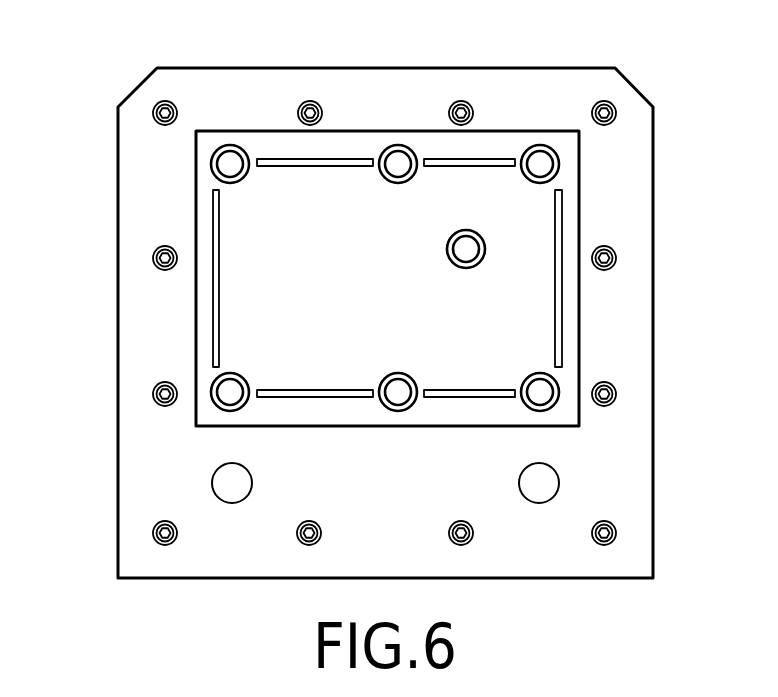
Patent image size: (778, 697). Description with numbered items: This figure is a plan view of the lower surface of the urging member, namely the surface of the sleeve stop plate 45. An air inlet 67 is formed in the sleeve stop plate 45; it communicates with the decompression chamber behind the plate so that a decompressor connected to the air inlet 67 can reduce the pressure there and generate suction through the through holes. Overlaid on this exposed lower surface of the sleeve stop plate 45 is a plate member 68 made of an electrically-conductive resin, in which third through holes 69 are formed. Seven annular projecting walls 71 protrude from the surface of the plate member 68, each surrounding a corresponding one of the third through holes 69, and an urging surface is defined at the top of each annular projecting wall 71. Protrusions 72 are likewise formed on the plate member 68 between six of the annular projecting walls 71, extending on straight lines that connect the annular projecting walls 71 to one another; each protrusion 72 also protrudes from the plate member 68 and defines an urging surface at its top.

The sleeve stop plate 45 is at (118, 140).
The air inlet 67 is at (235, 502).
The plate member 68 is at (196, 317).
The third through holes 69 is at (228, 158).
The annular projecting walls 71 is at (238, 160).
The protrusions 72 is at (212, 192).